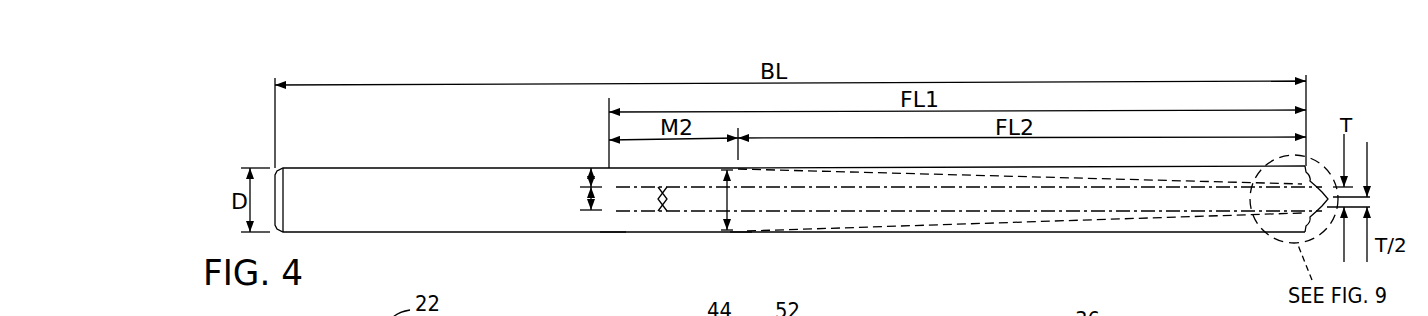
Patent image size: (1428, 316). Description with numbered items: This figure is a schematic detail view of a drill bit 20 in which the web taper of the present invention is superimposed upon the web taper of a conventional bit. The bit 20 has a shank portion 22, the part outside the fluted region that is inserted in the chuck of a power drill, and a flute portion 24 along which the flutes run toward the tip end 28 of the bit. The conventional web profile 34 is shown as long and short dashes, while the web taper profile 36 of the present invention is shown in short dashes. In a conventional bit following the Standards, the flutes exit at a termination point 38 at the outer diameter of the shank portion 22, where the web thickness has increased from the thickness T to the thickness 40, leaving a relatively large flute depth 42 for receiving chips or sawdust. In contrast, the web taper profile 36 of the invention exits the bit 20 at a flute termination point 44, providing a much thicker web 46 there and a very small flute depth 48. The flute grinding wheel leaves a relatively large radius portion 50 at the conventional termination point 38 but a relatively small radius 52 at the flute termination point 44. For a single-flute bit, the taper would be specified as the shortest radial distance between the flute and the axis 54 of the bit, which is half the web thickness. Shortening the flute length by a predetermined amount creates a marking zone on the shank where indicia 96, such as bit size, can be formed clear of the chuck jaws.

The drill bit 20 is at (891, 56).
The shank portion 22 is at (392, 166).
The flute portion 24 is at (960, 235).
The tip end 28 is at (1275, 244).
The conventional web profile 34 is at (855, 211).
The web taper profile of the present invention 36 is at (890, 222).
The termination point 38 is at (612, 183).
The web thickness at termination 40 is at (588, 202).
The flute depth 42 is at (590, 173).
The flute termination point 44 is at (742, 233).
The web 46 is at (724, 200).
The flute depth 48 is at (727, 168).
The radius portion 50 is at (612, 222).
The radius 52 is at (750, 228).
The axis 54 is at (1370, 194).
The indicia 96 is at (657, 198).